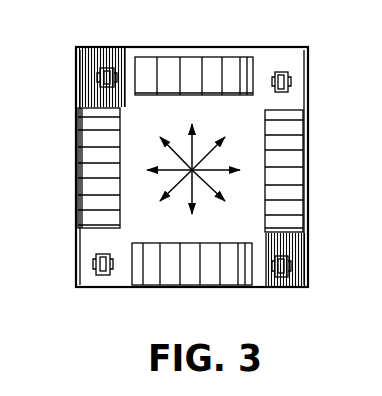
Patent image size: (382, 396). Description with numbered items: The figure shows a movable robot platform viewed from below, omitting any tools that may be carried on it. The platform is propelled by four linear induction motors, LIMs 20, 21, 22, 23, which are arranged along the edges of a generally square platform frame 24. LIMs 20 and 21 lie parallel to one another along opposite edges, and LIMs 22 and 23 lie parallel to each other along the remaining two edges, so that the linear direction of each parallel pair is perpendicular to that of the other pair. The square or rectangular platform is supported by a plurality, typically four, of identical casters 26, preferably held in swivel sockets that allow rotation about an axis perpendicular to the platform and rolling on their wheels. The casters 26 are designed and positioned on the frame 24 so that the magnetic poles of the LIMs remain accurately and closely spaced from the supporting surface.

The LIM 20 is at (95, 168).
The LIM 21 is at (285, 168).
The LIM 22 is at (185, 62).
The LIM 23 is at (200, 284).
The platform frame 24 is at (298, 262).
The casters 26 is at (100, 77).